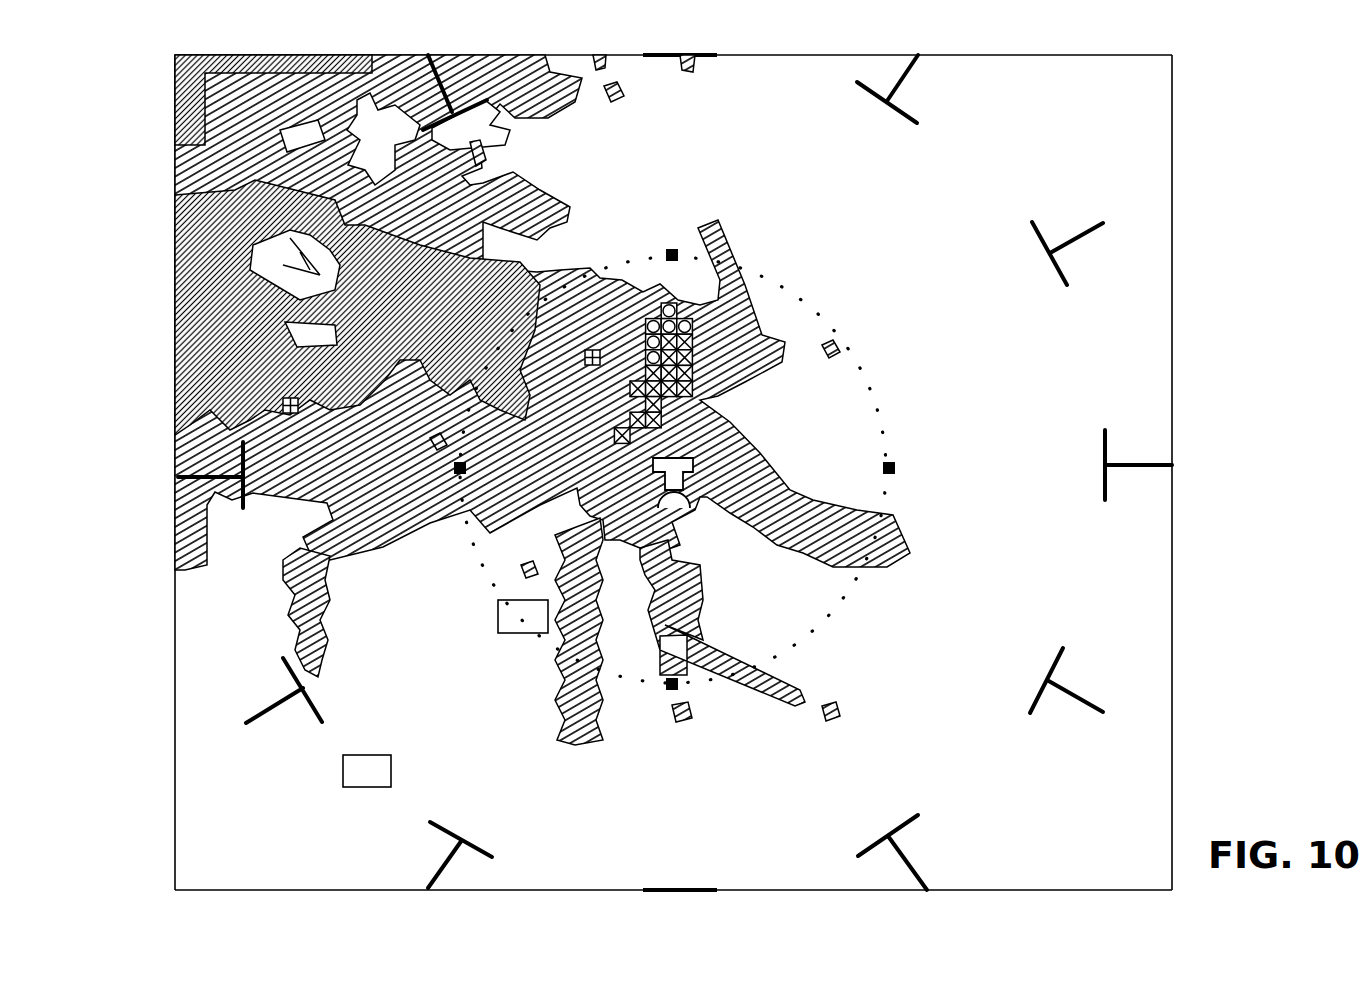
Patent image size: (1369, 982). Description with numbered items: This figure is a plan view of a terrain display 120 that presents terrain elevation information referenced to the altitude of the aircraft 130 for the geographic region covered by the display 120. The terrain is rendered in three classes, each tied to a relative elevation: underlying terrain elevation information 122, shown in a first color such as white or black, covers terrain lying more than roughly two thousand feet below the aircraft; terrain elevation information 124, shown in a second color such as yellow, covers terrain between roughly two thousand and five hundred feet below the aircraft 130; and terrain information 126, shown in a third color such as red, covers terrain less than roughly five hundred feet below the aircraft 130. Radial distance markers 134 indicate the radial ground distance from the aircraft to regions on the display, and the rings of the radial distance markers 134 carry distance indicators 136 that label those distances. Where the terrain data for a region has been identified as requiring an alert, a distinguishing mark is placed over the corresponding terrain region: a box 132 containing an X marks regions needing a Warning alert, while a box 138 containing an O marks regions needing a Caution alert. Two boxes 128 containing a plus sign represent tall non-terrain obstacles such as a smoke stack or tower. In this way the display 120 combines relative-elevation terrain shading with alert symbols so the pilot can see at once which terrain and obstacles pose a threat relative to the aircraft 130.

The display 120 is at (140, 98).
The underlying terrain elevation information 122 is at (1000, 397).
The terrain elevation information 124 is at (176, 517).
The terrain information 126 is at (176, 320).
The boxes with a plus sign 128 is at (283, 404).
The aircraft 130 is at (684, 500).
The box with an X 132 is at (633, 300).
The radial distance markers 134 is at (893, 467).
The distance indicators 136 is at (387, 752).
The box with an O 138 is at (700, 315).